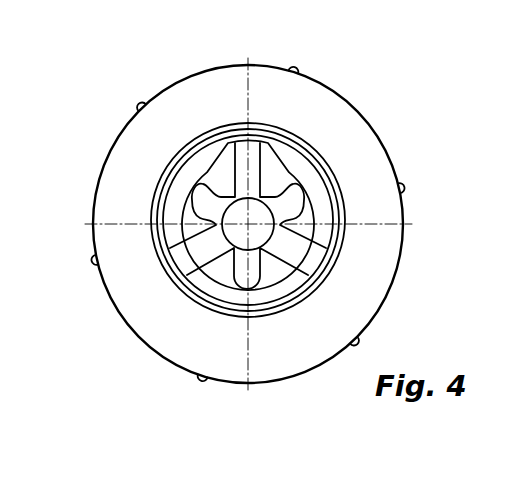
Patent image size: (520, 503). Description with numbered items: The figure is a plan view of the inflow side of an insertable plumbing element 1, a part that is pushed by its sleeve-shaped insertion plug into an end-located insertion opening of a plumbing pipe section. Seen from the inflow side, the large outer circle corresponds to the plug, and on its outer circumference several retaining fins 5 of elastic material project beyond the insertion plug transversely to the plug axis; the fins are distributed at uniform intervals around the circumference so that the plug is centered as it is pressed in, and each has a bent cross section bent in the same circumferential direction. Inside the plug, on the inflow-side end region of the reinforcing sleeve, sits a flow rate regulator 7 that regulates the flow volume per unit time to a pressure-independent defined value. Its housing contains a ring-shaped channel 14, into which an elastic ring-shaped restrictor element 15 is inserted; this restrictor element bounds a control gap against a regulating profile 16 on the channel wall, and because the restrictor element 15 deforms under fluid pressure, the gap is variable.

The insertable plumbing element 1 is at (406, 102).
The retaining fin 5 is at (139, 104).
The flow rate regulator 7 is at (277, 174).
The ring-shaped channel 14 is at (218, 174).
The ring-shaped restrictor element 15 is at (308, 221).
The regulating profile 16 is at (220, 270).